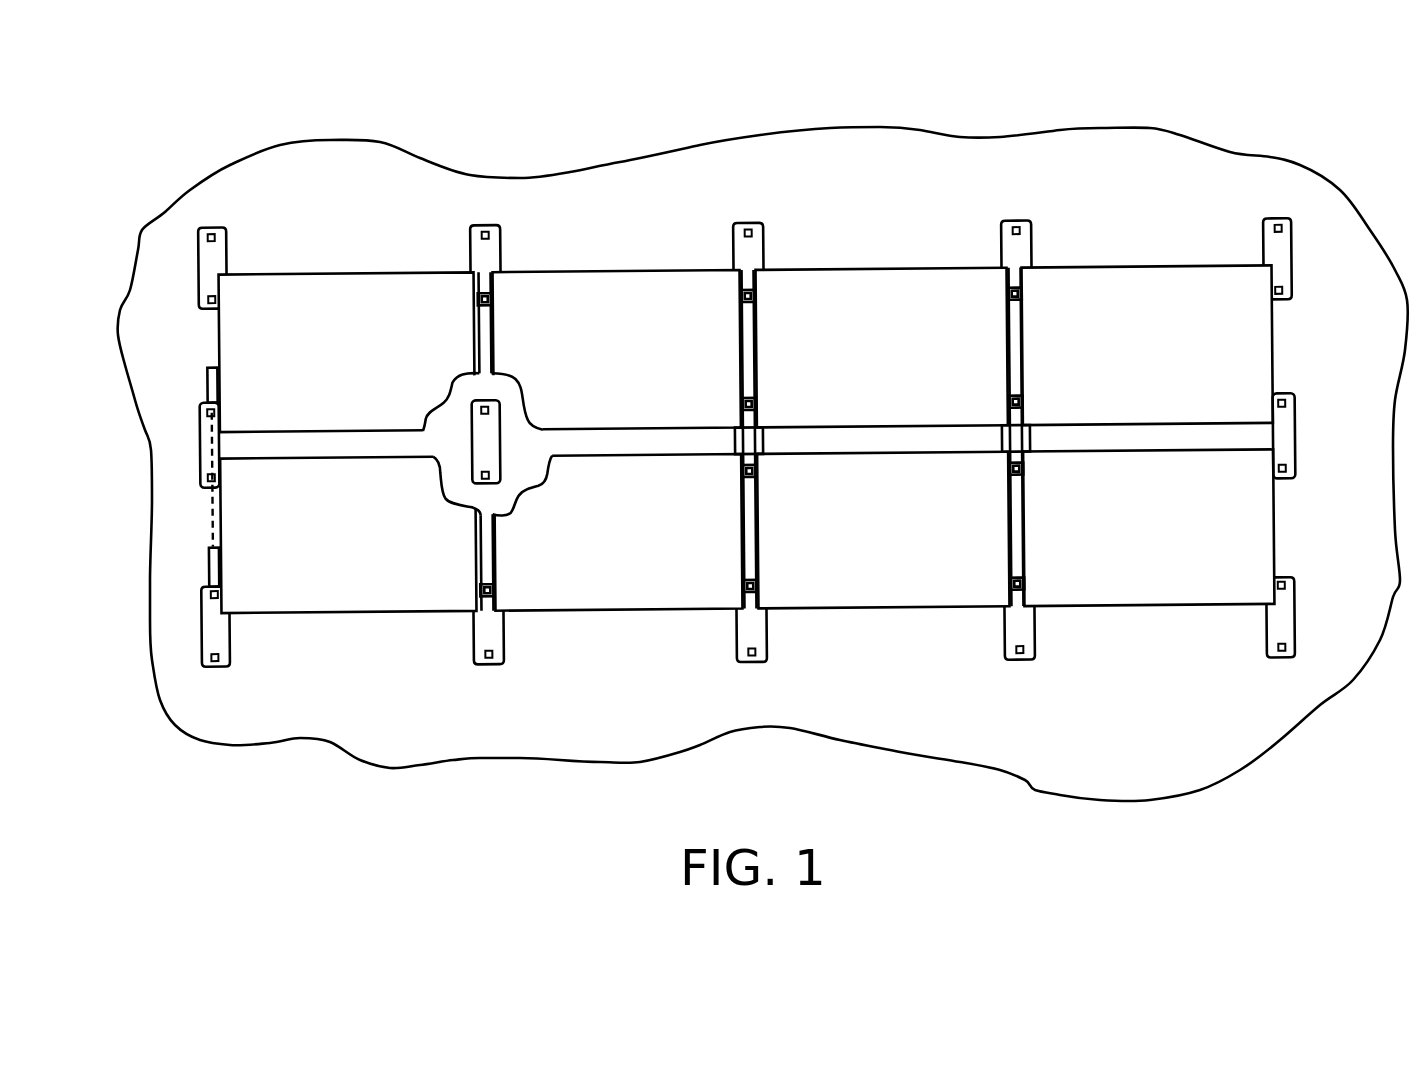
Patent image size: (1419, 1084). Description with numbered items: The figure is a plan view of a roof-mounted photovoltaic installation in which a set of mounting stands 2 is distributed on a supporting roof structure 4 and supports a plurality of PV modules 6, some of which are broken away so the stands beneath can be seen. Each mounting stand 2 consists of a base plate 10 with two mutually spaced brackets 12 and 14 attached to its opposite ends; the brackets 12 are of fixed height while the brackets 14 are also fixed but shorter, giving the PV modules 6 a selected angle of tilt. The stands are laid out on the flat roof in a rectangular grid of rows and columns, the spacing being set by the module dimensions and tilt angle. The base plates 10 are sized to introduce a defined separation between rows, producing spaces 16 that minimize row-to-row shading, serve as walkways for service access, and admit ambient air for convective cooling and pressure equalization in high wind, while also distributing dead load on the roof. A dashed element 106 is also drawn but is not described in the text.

The mounting stand 2 is at (240, 257).
The supporting roof structure 4 is at (1025, 790).
The PV module 6 is at (324, 268).
The base plate 10 is at (482, 430).
The bracket 12 is at (212, 232).
The bracket 14 is at (207, 303).
The space 16 is at (622, 440).
The hidden rail portion 106 is at (212, 498).